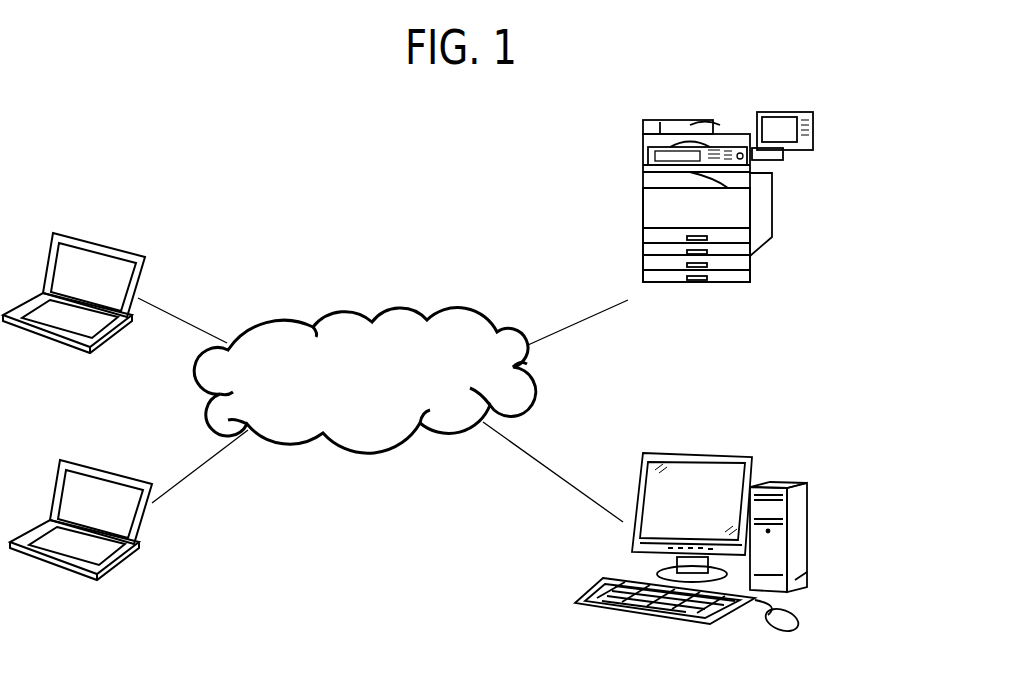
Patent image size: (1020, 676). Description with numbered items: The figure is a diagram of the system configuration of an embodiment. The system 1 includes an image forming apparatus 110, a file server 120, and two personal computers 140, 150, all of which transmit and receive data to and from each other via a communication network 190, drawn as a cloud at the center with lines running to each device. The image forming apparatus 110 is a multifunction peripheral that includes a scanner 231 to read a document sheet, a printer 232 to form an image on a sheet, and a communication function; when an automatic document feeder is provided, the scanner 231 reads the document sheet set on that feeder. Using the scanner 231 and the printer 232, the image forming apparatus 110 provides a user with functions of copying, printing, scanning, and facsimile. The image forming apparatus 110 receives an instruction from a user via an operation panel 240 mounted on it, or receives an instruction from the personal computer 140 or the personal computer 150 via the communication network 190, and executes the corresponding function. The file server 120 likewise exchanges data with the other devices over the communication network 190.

The system 1 is at (852, 64).
The image forming apparatus 110 is at (730, 134).
The file server 120 is at (730, 452).
The personal computer 140 is at (83, 237).
The personal computer 150 is at (68, 458).
The communication network 190 is at (398, 308).
The scanner 231 is at (629, 123).
The printer 232 is at (629, 160).
The operation panel 240 is at (818, 112).